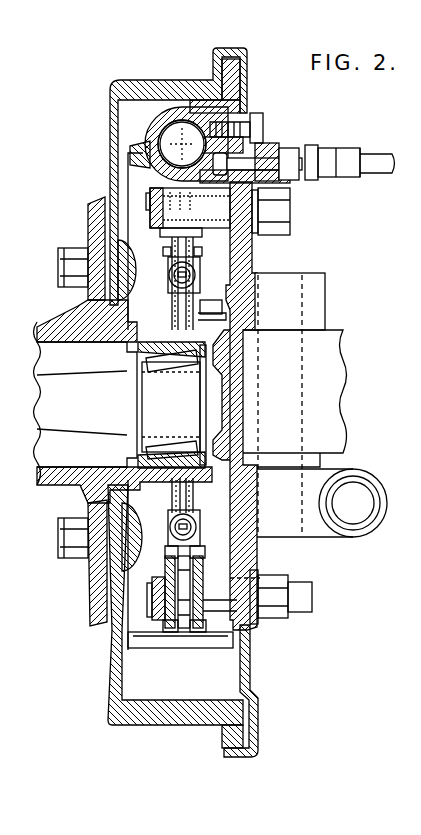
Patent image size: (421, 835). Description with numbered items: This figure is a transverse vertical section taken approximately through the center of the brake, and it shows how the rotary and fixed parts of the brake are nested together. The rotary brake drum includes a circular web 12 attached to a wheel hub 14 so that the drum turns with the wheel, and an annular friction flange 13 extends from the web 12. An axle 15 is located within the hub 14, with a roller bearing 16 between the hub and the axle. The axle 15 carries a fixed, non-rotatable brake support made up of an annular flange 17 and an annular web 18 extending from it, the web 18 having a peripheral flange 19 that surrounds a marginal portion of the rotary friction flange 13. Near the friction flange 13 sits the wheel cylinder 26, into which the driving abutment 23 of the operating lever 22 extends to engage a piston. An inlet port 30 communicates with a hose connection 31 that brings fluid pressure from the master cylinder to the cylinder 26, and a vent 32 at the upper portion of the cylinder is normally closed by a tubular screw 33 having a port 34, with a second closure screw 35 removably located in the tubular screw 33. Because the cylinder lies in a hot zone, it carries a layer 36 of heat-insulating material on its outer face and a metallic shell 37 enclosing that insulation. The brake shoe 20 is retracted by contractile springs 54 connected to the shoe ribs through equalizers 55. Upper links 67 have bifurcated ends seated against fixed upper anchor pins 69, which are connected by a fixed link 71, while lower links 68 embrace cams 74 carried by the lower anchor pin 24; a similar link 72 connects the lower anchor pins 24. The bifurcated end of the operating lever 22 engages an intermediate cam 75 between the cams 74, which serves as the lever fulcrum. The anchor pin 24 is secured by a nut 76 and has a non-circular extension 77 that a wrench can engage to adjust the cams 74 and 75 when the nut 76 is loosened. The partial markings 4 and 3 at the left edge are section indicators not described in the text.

The annular friction flange 13 is at (142, 84).
The vent 32 is at (175, 98).
The tubular screw 33 is at (205, 117).
The port 34 is at (222, 108).
The second closure screw 35 is at (250, 113).
The metallic shell 37 is at (150, 115).
The layer of heat-insulating material 36 is at (148, 127).
The driving abutment 23 is at (176, 140).
The wheel cylinder 26 is at (150, 158).
The web 12 is at (110, 156).
The inlet port 30 is at (166, 175).
The hose connection 31 is at (327, 157).
The upper anchor pin 69 is at (148, 202).
The fixed link 71 is at (172, 238).
The operating lever 22 is at (180, 242).
The upper link 67 is at (167, 250).
The contractile spring 54 is at (165, 282).
The equalizer 55 is at (204, 288).
The wheel hub 14 is at (78, 316).
The axle 15 is at (86, 403).
The roller bearing 16 is at (173, 362).
The annular flange 17 is at (250, 551).
The non-circular extension 77 is at (309, 593).
The nut 76 is at (276, 622).
The brake shoe 20 is at (115, 152).
The lower anchor pin 24 is at (152, 593).
The lower link 68 is at (198, 552).
The link 72 is at (150, 612).
The cam 74 is at (167, 627).
The cam 75 is at (187, 640).
The annular web 18 is at (250, 668).
The peripheral flange 19 is at (222, 755).
The section line 4 is at (4, 337).
The section line 3 is at (8, 404).